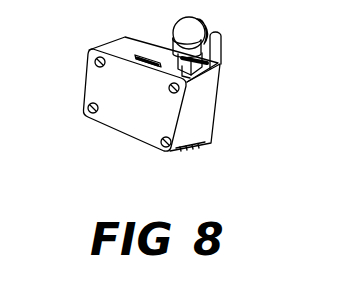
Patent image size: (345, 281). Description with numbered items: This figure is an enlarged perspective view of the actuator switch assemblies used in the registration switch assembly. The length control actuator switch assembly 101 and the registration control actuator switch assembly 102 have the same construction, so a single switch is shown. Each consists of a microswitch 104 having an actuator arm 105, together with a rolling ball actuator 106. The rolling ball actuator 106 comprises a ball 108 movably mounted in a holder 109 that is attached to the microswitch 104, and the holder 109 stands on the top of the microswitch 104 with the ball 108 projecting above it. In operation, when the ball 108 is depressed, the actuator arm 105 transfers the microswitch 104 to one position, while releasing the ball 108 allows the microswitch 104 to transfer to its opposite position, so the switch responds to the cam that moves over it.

The length control actuator switch assembly 101 is at (109, 138).
The registration control actuator switch assembly 102 is at (147, 153).
The microswitch 104 is at (90, 83).
The actuator arm 105 is at (160, 53).
The rolling ball actuator 106 is at (202, 19).
The ball 108 is at (209, 31).
The holder 109 is at (221, 61).